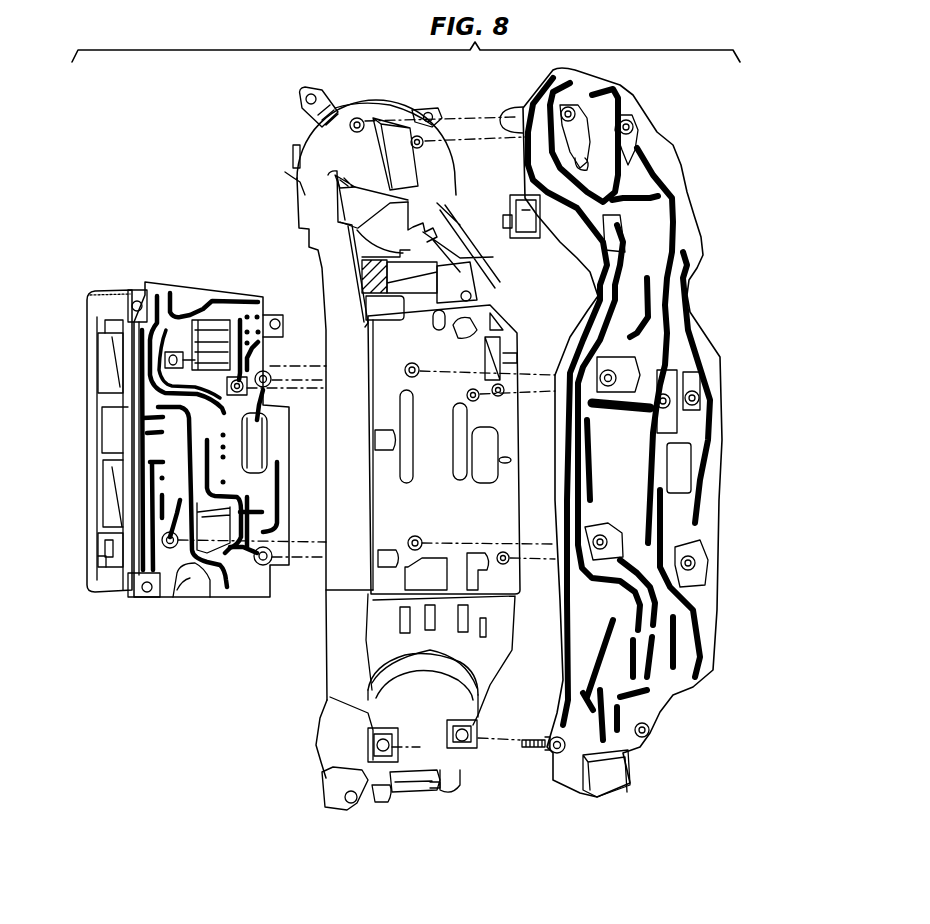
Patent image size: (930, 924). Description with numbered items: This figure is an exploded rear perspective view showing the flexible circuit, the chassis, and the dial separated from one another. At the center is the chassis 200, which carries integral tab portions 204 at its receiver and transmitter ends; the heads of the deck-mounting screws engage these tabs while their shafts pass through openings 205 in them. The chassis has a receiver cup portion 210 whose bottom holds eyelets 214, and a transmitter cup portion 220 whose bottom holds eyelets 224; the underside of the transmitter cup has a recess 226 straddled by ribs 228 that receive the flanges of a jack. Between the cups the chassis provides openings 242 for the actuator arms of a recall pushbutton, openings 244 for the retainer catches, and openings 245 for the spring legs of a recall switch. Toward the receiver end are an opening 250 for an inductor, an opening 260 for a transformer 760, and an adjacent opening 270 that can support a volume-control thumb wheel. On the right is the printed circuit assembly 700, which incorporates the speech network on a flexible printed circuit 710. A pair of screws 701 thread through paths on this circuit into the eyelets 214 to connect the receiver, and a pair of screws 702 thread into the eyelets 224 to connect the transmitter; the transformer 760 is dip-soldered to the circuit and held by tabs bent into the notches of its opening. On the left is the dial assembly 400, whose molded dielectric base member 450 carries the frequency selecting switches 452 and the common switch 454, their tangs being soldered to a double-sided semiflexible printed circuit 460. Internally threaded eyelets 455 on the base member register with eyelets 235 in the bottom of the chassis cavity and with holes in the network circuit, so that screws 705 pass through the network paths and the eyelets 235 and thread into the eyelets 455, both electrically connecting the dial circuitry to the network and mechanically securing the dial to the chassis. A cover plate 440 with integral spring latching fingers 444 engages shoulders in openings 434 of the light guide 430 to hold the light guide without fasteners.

The chassis 200 is at (323, 263).
The tab portions 204 is at (300, 100).
The openings 205 is at (312, 93).
The receiver cup portion 210 is at (313, 132).
The eyelets 214 is at (420, 110).
The transmitter cup portion 220 is at (342, 727).
The eyelets 224 is at (463, 735).
The recess 226 is at (412, 785).
The ribs 228 is at (385, 785).
The eyelets 235 is at (473, 390).
The openings 242 is at (423, 607).
The openings 244 is at (440, 637).
The openings 245 is at (477, 637).
The opening 250 is at (473, 242).
The opening 260 is at (353, 228).
The opening 270 is at (407, 292).
The dial assembly 400 is at (110, 380).
The light guide 430 is at (105, 437).
The openings 434 is at (105, 560).
The cover plate 440 is at (105, 310).
The spring latching fingers 444 is at (112, 543).
The base member 450 is at (130, 410).
The frequency selecting switches 452 is at (113, 342).
The common switch 454 is at (208, 337).
The eyelets 455 is at (243, 377).
The printed circuit 460 is at (183, 560).
The printed circuit assembly 700 is at (757, 243).
The screws 701 is at (628, 128).
The screws 702 is at (647, 733).
The screws 705 is at (667, 410).
The flexible printed circuit 710 is at (680, 207).
The transformer 760 is at (517, 200).